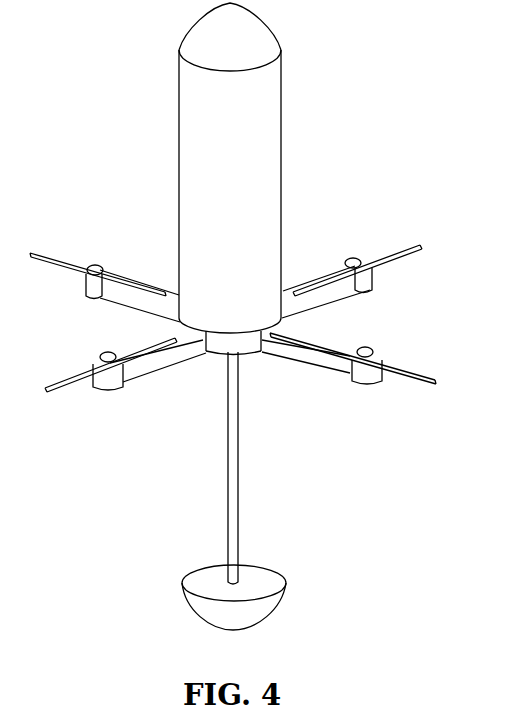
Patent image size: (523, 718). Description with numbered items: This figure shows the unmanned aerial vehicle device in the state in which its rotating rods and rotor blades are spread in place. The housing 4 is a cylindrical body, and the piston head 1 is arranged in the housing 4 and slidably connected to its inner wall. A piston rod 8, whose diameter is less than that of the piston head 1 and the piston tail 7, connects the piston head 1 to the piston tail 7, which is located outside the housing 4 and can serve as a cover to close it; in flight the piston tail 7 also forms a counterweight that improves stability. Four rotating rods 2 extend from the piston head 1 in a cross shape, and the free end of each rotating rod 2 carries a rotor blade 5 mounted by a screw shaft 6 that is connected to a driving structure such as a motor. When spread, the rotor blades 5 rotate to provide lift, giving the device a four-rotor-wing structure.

The piston head 1 is at (215, 352).
The rotating rod 2 is at (305, 358).
The housing 4 is at (213, 158).
The rotor blade 5 is at (383, 250).
The screw shaft 6 is at (97, 268).
The piston tail 7 is at (242, 612).
The piston rod 8 is at (227, 485).